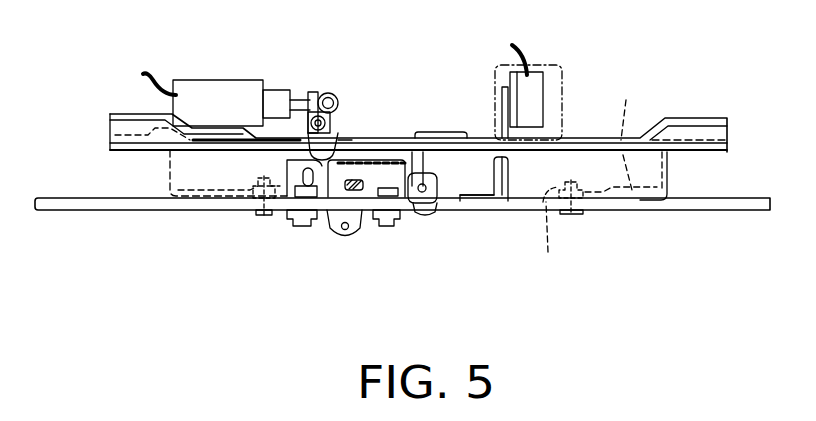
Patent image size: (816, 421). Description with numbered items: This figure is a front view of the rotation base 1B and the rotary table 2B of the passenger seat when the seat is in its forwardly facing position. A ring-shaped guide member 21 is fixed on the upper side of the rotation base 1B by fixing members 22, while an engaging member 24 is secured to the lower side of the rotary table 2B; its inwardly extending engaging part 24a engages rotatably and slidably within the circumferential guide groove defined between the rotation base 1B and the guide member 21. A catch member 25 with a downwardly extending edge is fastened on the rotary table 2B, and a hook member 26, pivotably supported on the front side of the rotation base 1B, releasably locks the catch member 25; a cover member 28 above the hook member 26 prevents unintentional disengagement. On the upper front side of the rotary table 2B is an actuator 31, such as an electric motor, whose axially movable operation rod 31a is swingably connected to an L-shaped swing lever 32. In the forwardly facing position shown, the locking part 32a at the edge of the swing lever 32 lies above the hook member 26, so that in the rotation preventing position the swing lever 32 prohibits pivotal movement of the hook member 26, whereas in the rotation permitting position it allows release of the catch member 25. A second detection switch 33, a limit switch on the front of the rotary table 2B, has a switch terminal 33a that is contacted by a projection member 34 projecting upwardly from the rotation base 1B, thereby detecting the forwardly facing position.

The rotation base 1B is at (704, 212).
The rotary table 2B is at (696, 118).
The guide member 21 is at (628, 125).
The fixing member 22 is at (545, 248).
The engaging member 24 is at (670, 173).
The engaging part 24a is at (645, 203).
The catch member 25 is at (428, 205).
The hook member 26 is at (421, 203).
The cover member 28 is at (290, 165).
The actuator 31 is at (229, 92).
The operation rod 31a is at (301, 92).
The swing lever 32 is at (338, 95).
The locking part 32a is at (352, 140).
The second detection switch 33 is at (535, 82).
The switch terminal 33a is at (493, 113).
The projection member 34 is at (510, 178).